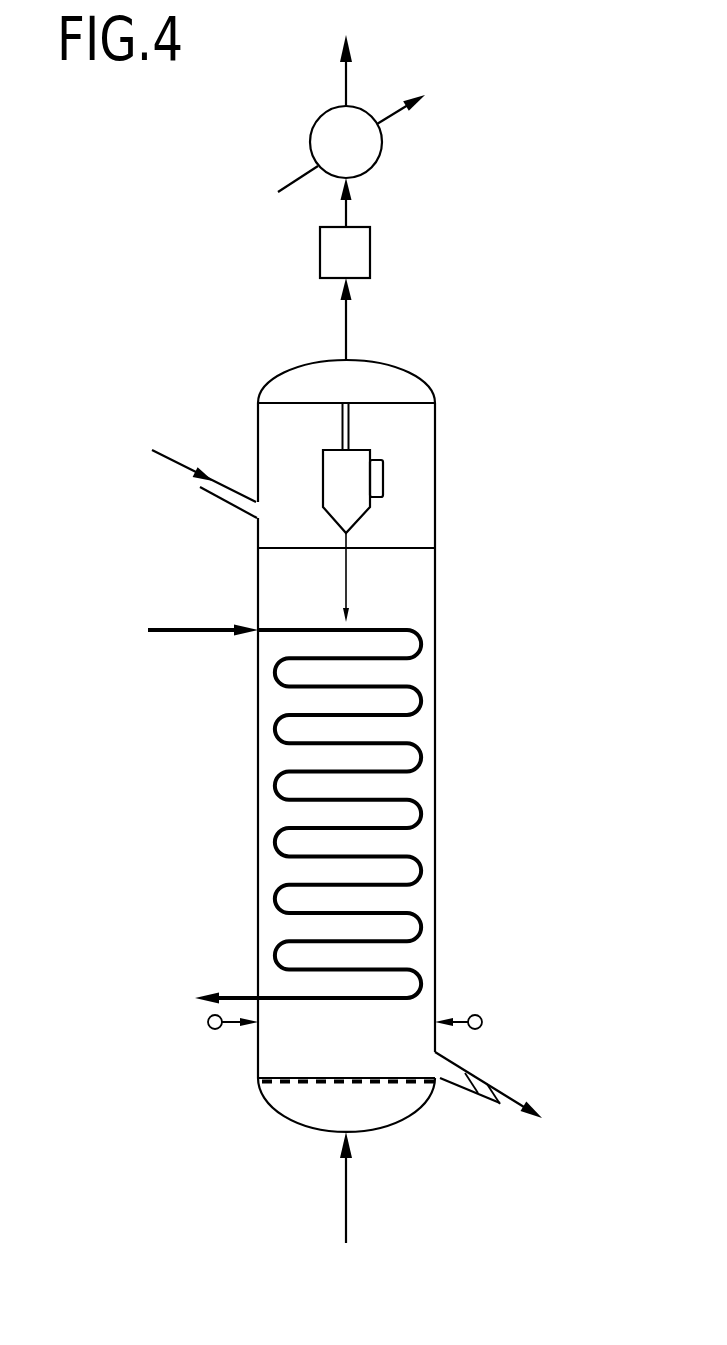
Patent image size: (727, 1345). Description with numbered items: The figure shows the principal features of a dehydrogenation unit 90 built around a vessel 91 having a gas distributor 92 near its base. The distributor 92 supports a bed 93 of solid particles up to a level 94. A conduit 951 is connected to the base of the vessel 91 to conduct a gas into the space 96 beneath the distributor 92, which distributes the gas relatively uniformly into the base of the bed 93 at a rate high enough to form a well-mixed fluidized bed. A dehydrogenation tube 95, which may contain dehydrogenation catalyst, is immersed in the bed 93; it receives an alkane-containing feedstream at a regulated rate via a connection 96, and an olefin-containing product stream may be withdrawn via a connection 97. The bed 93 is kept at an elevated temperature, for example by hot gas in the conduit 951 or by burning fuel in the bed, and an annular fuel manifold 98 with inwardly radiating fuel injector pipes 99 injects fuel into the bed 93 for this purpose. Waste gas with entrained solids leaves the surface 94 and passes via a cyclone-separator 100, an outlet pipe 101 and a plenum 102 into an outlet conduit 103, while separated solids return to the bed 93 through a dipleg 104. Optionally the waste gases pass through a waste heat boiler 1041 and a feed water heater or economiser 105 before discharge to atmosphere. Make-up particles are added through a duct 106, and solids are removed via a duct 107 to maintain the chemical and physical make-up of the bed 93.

The dehydrogenation unit 90 is at (168, 848).
The vessel 91 is at (437, 682).
The gas distributor 92 is at (292, 1080).
The bed 93 is at (423, 590).
The level 94 is at (405, 548).
The dehydrogenation tube 95 is at (420, 770).
The connection 96 is at (202, 635).
The connection 97 is at (227, 993).
The annular fuel manifold 98 is at (208, 1025).
The fuel injector pipes 99 is at (230, 1025).
The cyclone-separator 100 is at (357, 462).
The outlet pipe 101 is at (350, 418).
The plenum 102 is at (392, 375).
The outlet conduit 103 is at (346, 322).
The dipleg 104 is at (345, 539).
The feed water heater or economiser 105 is at (367, 155).
The duct 106 is at (218, 477).
The duct 107 is at (493, 1083).
The conduit 951 is at (350, 1190).
The waste heat boiler 1041 is at (357, 250).